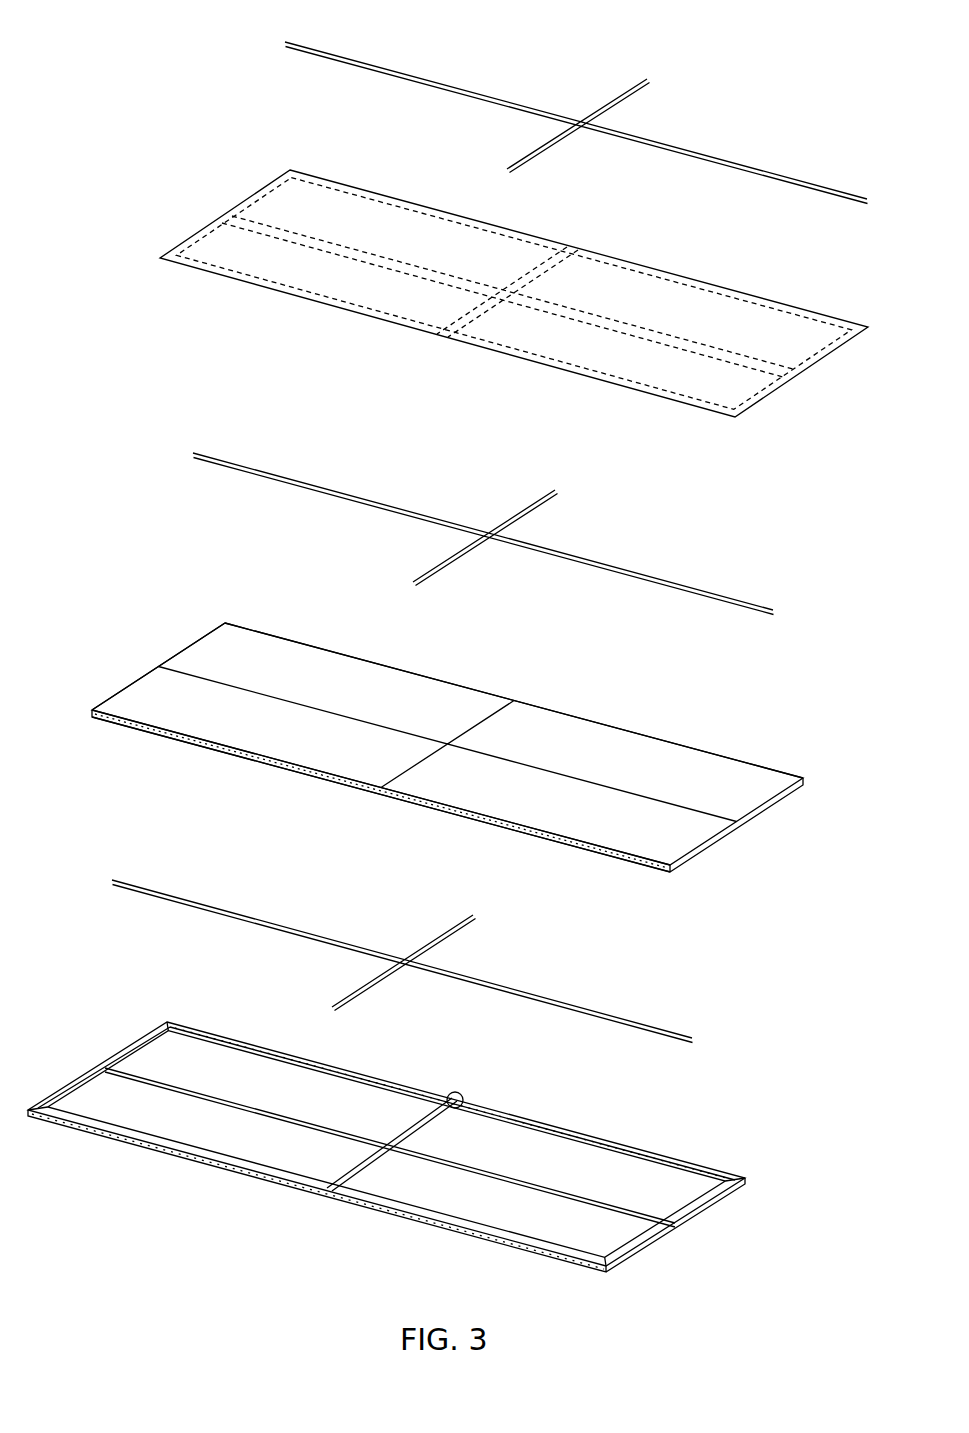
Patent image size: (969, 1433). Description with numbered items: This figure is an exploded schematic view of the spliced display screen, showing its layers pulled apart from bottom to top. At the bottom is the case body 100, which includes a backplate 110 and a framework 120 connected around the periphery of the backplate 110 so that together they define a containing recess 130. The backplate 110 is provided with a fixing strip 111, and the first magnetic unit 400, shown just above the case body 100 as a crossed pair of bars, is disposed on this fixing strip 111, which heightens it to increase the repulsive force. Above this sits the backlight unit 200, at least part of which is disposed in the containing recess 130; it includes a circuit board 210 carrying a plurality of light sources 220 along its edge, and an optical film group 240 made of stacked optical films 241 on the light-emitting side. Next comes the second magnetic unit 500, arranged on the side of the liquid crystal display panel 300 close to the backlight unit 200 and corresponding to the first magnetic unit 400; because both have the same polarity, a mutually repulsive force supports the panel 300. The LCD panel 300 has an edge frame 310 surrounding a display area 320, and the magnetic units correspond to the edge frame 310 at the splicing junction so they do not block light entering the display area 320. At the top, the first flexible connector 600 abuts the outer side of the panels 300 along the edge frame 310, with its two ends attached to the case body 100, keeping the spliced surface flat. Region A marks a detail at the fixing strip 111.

The case body 100 is at (386, 1147).
The backplate 110 is at (126, 1122).
The fixing strip 111 is at (340, 1188).
The framework 120 is at (72, 1126).
The containing recess 130 is at (210, 1135).
The backlight unit 200 is at (419, 724).
The circuit board 210 is at (107, 727).
The light sources 220 is at (167, 740).
The optical film group 240 is at (167, 660).
The optical films 241 is at (213, 630).
The liquid crystal display panel 300 is at (480, 269).
The edge frame 310 is at (262, 174).
The display area 320 is at (260, 210).
The first magnetic unit 400 is at (182, 899).
The second magnetic unit 500 is at (218, 460).
The first flexible connector 600 is at (290, 43).
The detail region A is at (462, 1092).